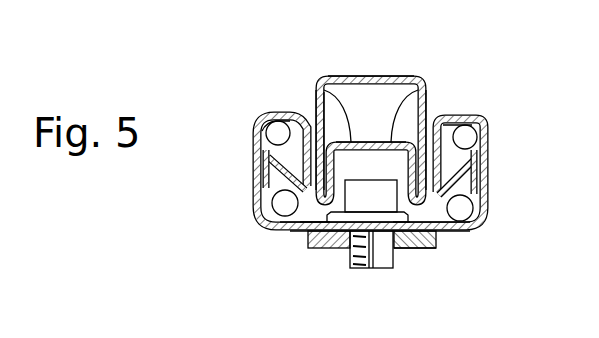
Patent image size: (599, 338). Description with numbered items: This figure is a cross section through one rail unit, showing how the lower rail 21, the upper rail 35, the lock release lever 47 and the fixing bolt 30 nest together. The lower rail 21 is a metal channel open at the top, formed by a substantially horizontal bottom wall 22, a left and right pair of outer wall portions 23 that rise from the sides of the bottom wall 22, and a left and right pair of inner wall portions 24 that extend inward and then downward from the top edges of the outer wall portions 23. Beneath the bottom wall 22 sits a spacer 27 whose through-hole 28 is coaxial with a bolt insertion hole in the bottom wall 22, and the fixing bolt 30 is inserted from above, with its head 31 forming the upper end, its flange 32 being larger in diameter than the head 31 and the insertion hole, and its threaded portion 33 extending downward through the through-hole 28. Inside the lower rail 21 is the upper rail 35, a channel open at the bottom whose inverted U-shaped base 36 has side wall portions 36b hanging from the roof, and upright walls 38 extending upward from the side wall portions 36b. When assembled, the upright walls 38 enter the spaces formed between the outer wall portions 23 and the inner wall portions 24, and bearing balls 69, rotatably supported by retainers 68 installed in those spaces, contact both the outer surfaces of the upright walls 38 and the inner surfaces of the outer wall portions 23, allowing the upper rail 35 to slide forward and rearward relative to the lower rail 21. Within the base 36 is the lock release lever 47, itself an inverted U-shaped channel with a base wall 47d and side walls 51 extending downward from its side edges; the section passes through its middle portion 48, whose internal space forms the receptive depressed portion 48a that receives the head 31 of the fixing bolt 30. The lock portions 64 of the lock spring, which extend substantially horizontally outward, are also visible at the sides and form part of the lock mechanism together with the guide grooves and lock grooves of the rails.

The lower rail 21 is at (488, 127).
The bottom wall 22 is at (475, 229).
The outer wall portions 23 is at (257, 180).
The inner wall portions 24 is at (284, 122).
The spacers 27 is at (425, 237).
The through-holes 28 is at (352, 247).
The fixing bolt 30 is at (322, 226).
The head 31 is at (404, 142).
The flange 32 is at (403, 235).
The threaded portion 33 is at (380, 268).
The upper rail 35 is at (413, 76).
The base 36 is at (318, 80).
The side wall portions 36b is at (313, 86).
The upright walls 38 is at (258, 203).
The lock release lever 47 is at (404, 116).
The base wall 47d is at (317, 92).
The middle portion 48 is at (352, 140).
The receptive depressed portion 48a is at (386, 150).
The side walls 51 is at (310, 223).
The lock portions 64 is at (486, 226).
The retainers 68 is at (262, 160).
The bearing balls 69 is at (274, 130).